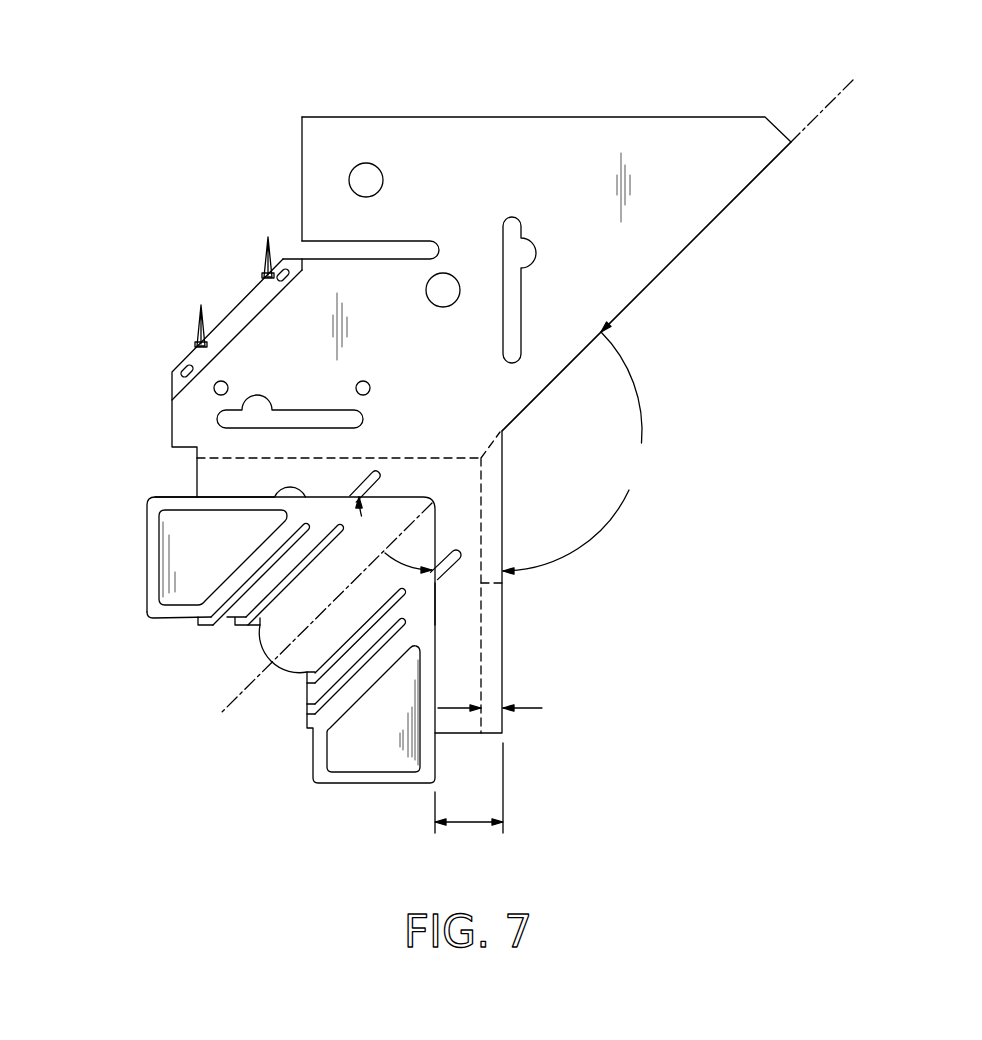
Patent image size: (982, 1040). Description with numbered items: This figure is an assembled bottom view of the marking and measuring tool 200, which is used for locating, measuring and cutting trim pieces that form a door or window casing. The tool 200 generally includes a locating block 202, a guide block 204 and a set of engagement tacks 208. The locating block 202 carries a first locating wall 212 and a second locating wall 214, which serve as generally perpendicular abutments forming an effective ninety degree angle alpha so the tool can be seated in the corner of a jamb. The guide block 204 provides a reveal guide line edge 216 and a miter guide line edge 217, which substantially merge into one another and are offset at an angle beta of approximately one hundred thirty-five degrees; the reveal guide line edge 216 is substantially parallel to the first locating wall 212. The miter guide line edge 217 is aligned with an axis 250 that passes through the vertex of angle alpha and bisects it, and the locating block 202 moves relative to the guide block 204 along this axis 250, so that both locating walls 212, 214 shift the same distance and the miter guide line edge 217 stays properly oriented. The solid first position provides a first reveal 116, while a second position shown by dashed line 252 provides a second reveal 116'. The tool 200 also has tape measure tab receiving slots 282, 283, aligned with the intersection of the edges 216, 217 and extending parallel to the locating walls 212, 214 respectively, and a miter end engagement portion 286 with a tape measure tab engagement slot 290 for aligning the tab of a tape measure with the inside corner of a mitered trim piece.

The marking and measuring tool 200 is at (500, 92).
The locating block 202 is at (130, 556).
The guide block 204 is at (681, 88).
The engagement tacks 208 is at (265, 257).
The first locating wall 212 is at (436, 602).
The second locating wall 214 is at (227, 497).
The reveal guide line edge 216 is at (502, 655).
The miter guide line edge 217 is at (672, 260).
The axis 250 is at (836, 99).
The dashed line 252 is at (502, 583).
The tape measure tab receiving slot 282 is at (522, 233).
The tape measure tab receiving slot 283 is at (292, 423).
The miter end engagement portion 286 is at (213, 225).
The tape measure tab engagement slot 290 is at (423, 242).
The reveal 116 is at (502, 796).
The second reveal 116' is at (514, 708).